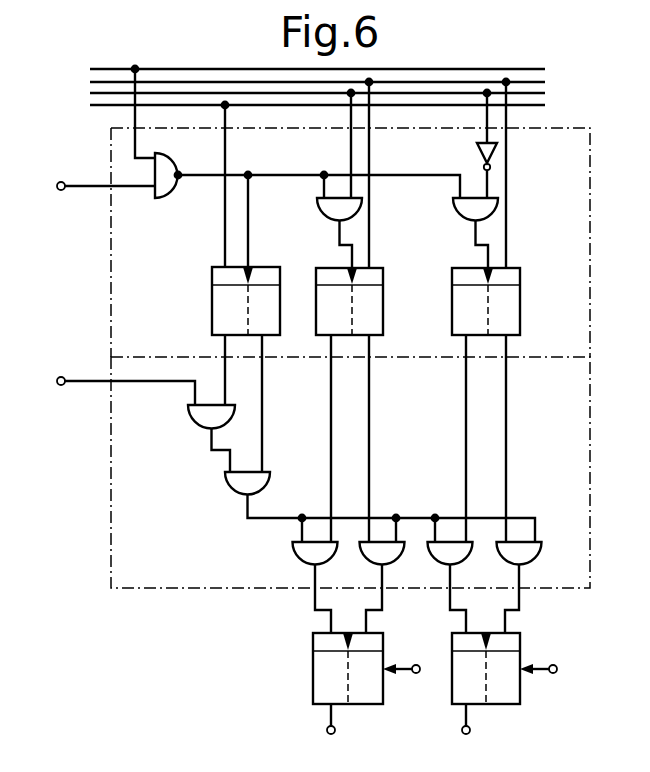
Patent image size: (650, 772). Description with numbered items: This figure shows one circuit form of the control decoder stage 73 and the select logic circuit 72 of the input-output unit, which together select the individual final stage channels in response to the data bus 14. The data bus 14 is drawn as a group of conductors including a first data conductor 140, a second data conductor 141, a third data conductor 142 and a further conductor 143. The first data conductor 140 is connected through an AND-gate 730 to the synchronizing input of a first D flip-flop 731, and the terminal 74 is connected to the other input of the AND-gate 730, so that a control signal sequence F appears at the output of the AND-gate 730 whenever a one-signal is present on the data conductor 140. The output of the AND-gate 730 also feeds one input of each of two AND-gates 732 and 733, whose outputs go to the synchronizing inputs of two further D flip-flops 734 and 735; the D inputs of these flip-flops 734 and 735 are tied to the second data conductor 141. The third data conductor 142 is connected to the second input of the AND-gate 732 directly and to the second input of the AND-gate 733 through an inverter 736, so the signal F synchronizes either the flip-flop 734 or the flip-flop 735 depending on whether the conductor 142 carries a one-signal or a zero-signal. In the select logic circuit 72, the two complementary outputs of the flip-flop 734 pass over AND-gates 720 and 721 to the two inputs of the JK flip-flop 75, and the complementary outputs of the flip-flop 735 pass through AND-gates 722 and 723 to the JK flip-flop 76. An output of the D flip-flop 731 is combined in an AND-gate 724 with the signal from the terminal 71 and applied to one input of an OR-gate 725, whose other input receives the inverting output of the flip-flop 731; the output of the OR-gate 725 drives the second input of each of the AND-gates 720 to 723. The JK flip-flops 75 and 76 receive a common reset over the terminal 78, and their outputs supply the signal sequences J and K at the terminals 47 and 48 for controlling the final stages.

The data bus 14 is at (314, 84).
The first data conductor 140 is at (90, 69).
The second data conductor 141 is at (90, 82).
The third data conductor 142 is at (90, 93).
The bus line 143 is at (90, 105).
The terminal 71 is at (58, 376).
The select logic circuit 72 is at (573, 440).
The control decoder stage 73 is at (573, 205).
The terminal 74 is at (58, 183).
The JK flip-flop 75 is at (324, 686).
The JK flip-flop 76 is at (499, 686).
The terminal 78 is at (416, 665).
The terminal 47 is at (327, 731).
The terminal 48 is at (462, 731).
The AND-gate 720 is at (305, 553).
The AND-gate 721 is at (375, 556).
The AND-gate 722 is at (455, 556).
The AND-gate 723 is at (530, 556).
The AND-gate 724 is at (200, 416).
The OR-gate 725 is at (240, 485).
The AND-gate 730 is at (170, 165).
The first D flip-flop 731 is at (222, 305).
The AND-gate 732 is at (330, 206).
The AND-gate 733 is at (465, 206).
The D flip-flop 734 is at (370, 300).
The D flip-flop 735 is at (508, 300).
The inverter 736 is at (461, 170).